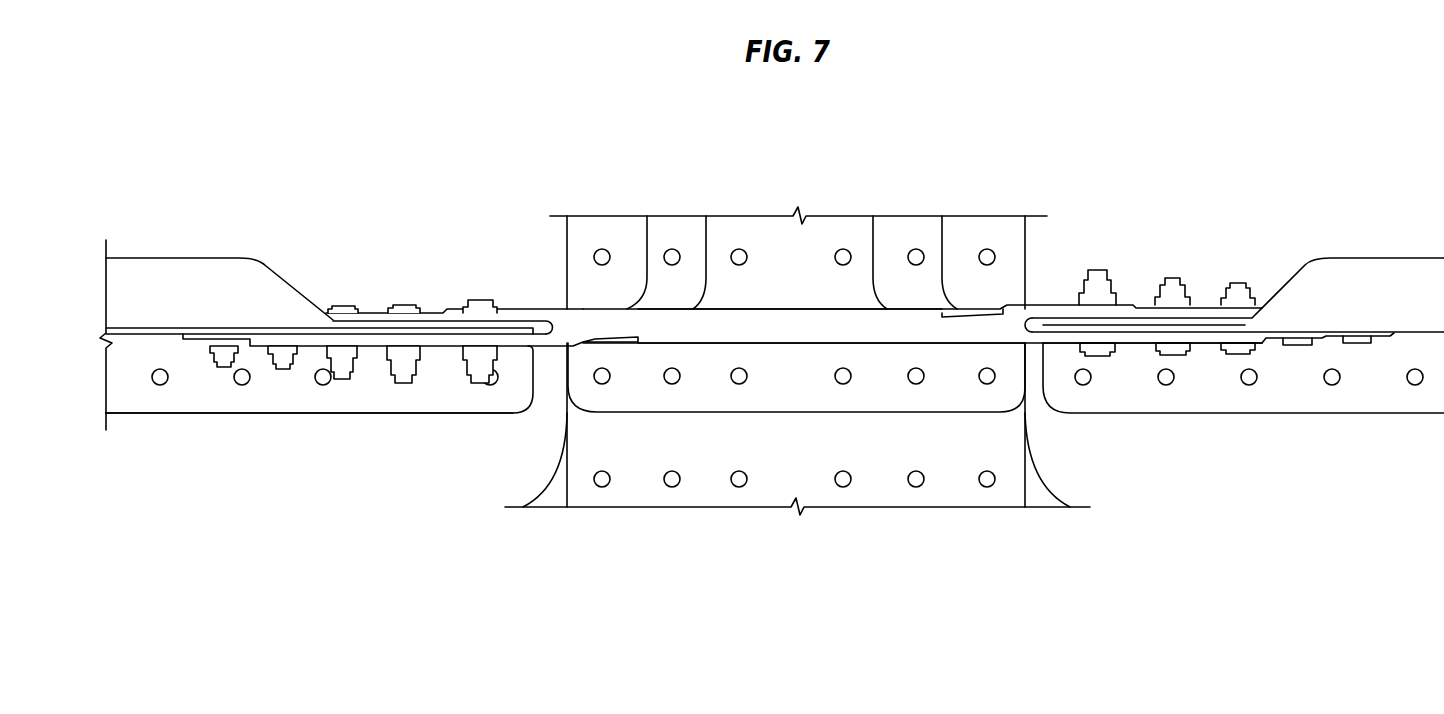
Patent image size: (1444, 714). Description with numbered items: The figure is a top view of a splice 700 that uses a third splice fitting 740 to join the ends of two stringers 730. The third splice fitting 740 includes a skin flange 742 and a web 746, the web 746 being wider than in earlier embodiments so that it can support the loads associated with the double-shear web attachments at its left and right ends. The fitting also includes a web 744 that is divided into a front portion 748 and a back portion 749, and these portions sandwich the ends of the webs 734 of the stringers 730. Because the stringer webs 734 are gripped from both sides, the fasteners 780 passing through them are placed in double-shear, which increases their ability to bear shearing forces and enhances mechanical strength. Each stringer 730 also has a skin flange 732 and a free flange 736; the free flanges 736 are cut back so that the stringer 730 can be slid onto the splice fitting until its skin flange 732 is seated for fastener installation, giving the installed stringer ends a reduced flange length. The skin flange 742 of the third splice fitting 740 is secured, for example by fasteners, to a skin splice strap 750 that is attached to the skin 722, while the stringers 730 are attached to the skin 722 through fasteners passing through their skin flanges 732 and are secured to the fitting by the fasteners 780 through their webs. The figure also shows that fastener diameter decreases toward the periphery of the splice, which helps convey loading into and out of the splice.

The splice 700 is at (699, 612).
The skin 722 is at (1153, 464).
The stringer 730 is at (481, 414).
The skin flange 732 is at (301, 402).
The web 734 is at (160, 343).
The free flange 736 is at (201, 279).
The third splice fitting 740 is at (839, 332).
The skin flange 742 is at (879, 366).
The web 744 is at (807, 347).
The web 746 is at (713, 328).
The front portion 748 is at (437, 348).
The back portion 749 is at (434, 312).
The skin splice strap 750 is at (925, 216).
The fasteners 780 is at (344, 306).